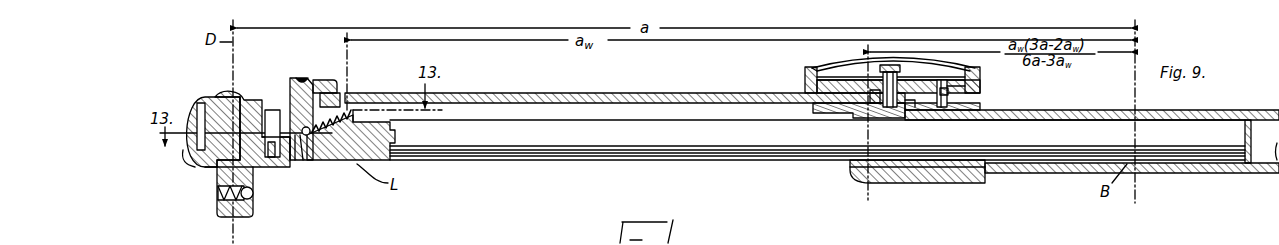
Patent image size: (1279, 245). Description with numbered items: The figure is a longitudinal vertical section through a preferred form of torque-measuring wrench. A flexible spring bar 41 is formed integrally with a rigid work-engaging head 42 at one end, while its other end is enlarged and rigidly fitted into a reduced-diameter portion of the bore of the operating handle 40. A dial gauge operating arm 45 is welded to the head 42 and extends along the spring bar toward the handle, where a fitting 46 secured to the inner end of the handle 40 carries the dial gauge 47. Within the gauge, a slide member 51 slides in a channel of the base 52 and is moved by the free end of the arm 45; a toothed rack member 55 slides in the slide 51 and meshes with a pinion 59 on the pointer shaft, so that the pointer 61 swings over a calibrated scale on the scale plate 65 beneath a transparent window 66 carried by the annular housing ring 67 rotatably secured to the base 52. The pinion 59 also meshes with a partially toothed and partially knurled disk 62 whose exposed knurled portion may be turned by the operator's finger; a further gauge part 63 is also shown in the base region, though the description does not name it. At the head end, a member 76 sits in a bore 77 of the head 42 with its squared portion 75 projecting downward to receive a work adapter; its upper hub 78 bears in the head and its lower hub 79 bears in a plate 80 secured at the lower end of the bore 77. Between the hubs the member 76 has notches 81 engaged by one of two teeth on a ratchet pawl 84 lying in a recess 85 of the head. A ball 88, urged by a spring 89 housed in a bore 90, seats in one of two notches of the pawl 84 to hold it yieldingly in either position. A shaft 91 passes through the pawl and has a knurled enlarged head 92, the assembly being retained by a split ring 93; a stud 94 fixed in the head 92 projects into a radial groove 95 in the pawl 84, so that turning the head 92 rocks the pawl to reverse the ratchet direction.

The operating handle 40 is at (1090, 110).
The spring bar 41 is at (647, 140).
The work-engaging head 42 is at (201, 103).
The dial gauge operating arm 45 is at (606, 93).
The fitting 46 is at (818, 116).
The dial gauge 47 is at (842, 61).
The slide member 51 is at (875, 103).
The base 52 is at (968, 88).
The toothed rack member 55 is at (890, 107).
The pinion 59 is at (908, 108).
The pointer 61 is at (976, 80).
The partially toothed and partially knurled disk 62 is at (950, 93).
The pin 63 is at (942, 107).
The scale card or plate 65 is at (808, 73).
The transparent closure or window 66 is at (812, 66).
The annular housing ring 67 is at (810, 86).
The squared portion 75 is at (244, 217).
The member 76 is at (192, 104).
The bore 77 is at (183, 150).
The upper hub 78 is at (229, 91).
The lower hub 79 is at (253, 163).
The plate 80 is at (201, 168).
The notches 81 is at (247, 100).
The ratchet pawl 84 is at (301, 160).
The recess 85 is at (309, 160).
The ball 88 is at (333, 160).
The spring 89 is at (343, 115).
The bore 90 is at (360, 120).
The shaft 91 is at (295, 160).
The enlarged head 92 is at (322, 80).
The split ring 93 is at (295, 80).
The stud 94 is at (302, 78).
The radial groove 95 is at (330, 93).